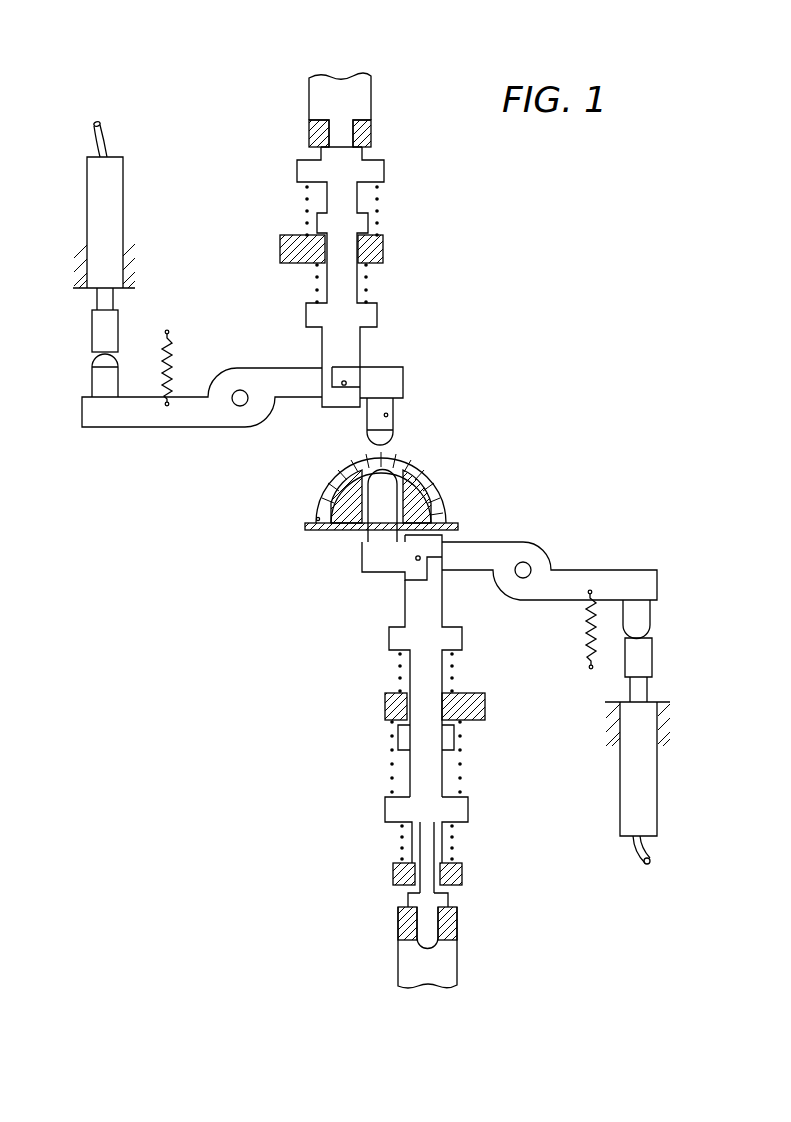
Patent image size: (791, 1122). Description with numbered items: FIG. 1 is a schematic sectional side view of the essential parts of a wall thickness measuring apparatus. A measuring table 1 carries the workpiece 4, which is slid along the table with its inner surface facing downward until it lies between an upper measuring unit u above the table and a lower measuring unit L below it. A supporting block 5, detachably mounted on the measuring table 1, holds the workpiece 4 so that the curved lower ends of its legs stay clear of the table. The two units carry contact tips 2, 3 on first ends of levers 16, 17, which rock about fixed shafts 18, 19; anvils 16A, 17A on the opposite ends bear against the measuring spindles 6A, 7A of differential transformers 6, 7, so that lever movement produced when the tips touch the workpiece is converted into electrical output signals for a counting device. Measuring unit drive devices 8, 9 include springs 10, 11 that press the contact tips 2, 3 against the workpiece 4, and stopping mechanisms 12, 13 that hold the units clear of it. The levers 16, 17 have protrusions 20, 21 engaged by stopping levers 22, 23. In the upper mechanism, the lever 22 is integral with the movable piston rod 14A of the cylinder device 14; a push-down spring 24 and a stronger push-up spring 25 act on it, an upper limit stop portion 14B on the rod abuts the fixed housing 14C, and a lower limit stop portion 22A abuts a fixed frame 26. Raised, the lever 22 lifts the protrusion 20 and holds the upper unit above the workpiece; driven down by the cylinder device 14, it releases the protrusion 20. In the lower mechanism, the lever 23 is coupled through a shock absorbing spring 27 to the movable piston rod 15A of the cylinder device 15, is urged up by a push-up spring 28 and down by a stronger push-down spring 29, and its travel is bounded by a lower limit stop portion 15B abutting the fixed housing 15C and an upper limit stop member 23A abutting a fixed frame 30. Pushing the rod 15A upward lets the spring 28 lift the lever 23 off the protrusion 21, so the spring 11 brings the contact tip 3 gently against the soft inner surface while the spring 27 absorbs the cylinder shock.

The measuring table 1 is at (450, 523).
The contact tip 2 is at (396, 417).
The contact tip 3 is at (383, 476).
The workpiece 4 is at (320, 490).
The supporting block 5 is at (346, 517).
The differential transformer 6 is at (124, 210).
The measuring spindle 6A is at (96, 330).
The differential transformer 7 is at (658, 805).
The measuring spindle 7A is at (654, 658).
The measuring unit drive device 8 is at (402, 318).
The measuring unit drive device 9 is at (370, 633).
The spring 10 is at (176, 360).
The spring 11 is at (588, 630).
The stopping mechanism 12 is at (388, 188).
The stopping mechanism 13 is at (384, 776).
The cylinder device 14 is at (367, 97).
The movable piston rod 14A is at (333, 130).
The upper limit stop portion 14B is at (319, 152).
The housing 14C is at (308, 93).
The cylinder device 15 is at (452, 969).
The movable piston rod 15A is at (428, 932).
The lower limit stop portion 15B is at (408, 900).
The housing 15C is at (405, 968).
The lever 16 is at (146, 430).
The anvil 16A is at (94, 378).
The lever 17 is at (590, 575).
The anvil 17A is at (650, 618).
The shaft 18 is at (240, 408).
The shaft 19 is at (530, 560).
The protrusion 20 is at (347, 382).
The protrusion 21 is at (416, 562).
The lever 22 is at (322, 350).
The lower limit stop portion 22A is at (366, 222).
The lever 23 is at (440, 615).
The upper limit stop member 23A is at (400, 741).
The push-down spring 24 is at (316, 280).
The push-up spring 25 is at (305, 211).
The frame 26 is at (380, 246).
The shock absorbing spring 27 is at (455, 836).
The push-up spring 28 is at (455, 679).
The push-down spring 29 is at (463, 766).
The frame 30 is at (384, 712).
The upper measuring unit u is at (257, 447).
The lower measuring unit L is at (606, 519).